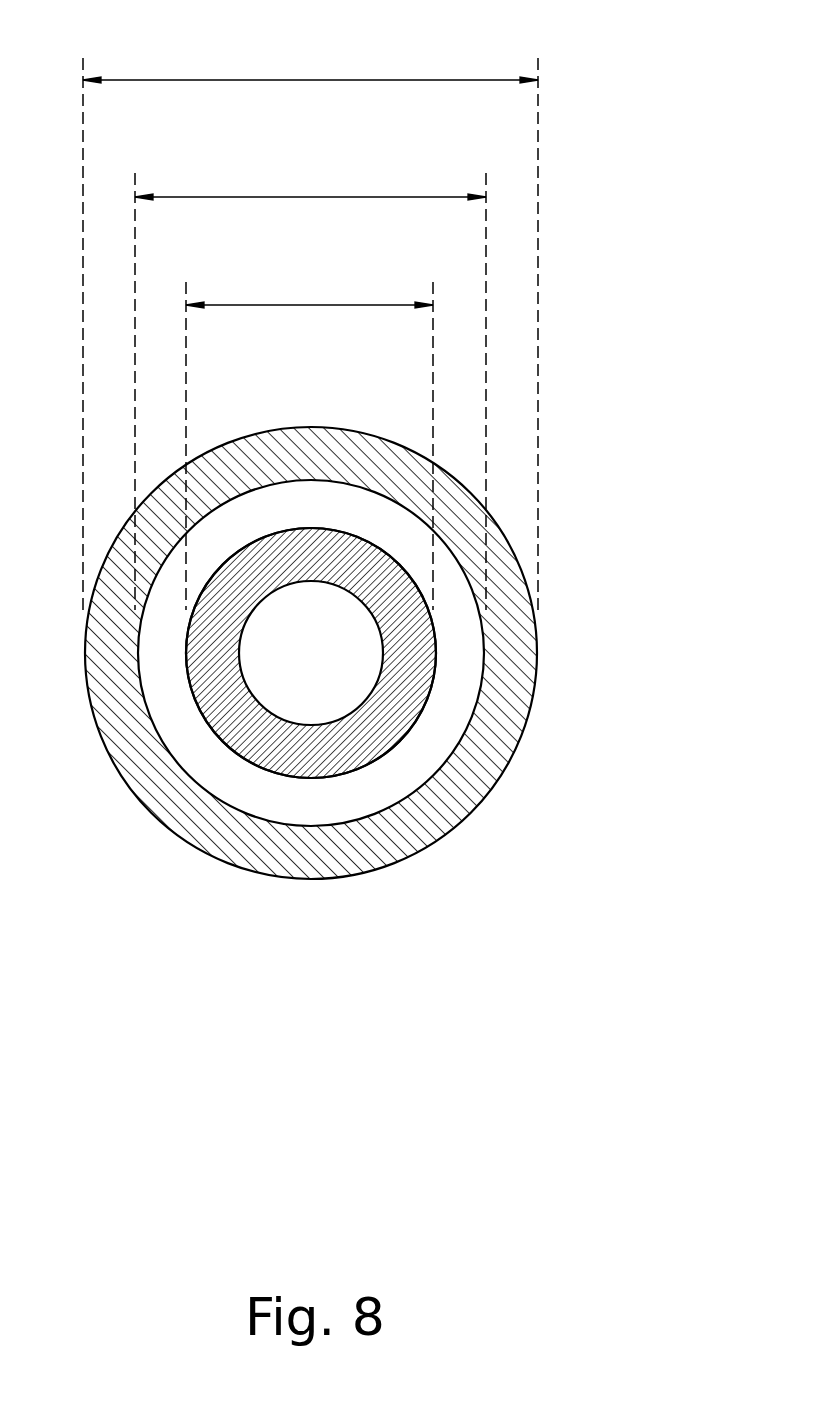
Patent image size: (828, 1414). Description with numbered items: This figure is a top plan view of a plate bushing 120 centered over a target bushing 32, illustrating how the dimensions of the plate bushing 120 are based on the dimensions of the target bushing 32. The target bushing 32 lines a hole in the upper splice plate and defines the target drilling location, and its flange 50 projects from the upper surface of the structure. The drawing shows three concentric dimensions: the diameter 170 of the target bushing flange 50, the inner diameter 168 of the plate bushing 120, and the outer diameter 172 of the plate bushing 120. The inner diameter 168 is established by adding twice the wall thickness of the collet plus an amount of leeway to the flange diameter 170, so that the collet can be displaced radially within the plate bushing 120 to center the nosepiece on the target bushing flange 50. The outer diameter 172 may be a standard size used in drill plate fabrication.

The outer diameter 172 is at (317, 80).
The inner diameter 168 is at (317, 197).
The diameter 170 is at (317, 305).
The plate bushing 120 is at (533, 610).
The flange 50 is at (300, 745).
The bushing 32 is at (282, 532).